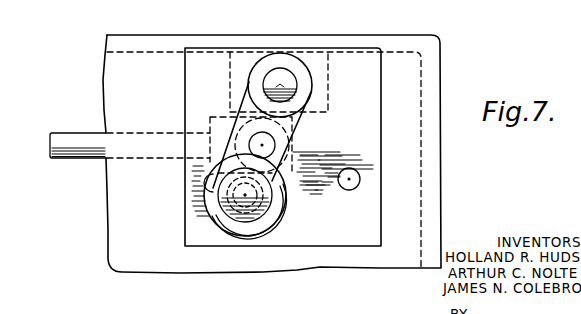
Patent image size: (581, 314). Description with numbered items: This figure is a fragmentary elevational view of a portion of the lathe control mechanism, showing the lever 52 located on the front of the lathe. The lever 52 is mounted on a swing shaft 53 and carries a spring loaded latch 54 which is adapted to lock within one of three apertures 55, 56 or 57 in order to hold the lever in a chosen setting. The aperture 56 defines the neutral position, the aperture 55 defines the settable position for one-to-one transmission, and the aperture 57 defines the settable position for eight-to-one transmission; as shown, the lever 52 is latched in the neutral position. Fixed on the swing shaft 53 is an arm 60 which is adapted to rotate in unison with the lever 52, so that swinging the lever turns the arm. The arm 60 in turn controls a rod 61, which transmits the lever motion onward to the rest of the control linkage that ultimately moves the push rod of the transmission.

The lever 52 is at (260, 226).
The swing shaft 53 is at (279, 73).
The spring loaded latch 54 is at (245, 215).
The aperture 55 is at (203, 180).
The aperture 56 is at (237, 200).
The aperture 57 is at (360, 180).
The arm 60 is at (207, 128).
The rod 61 is at (67, 160).